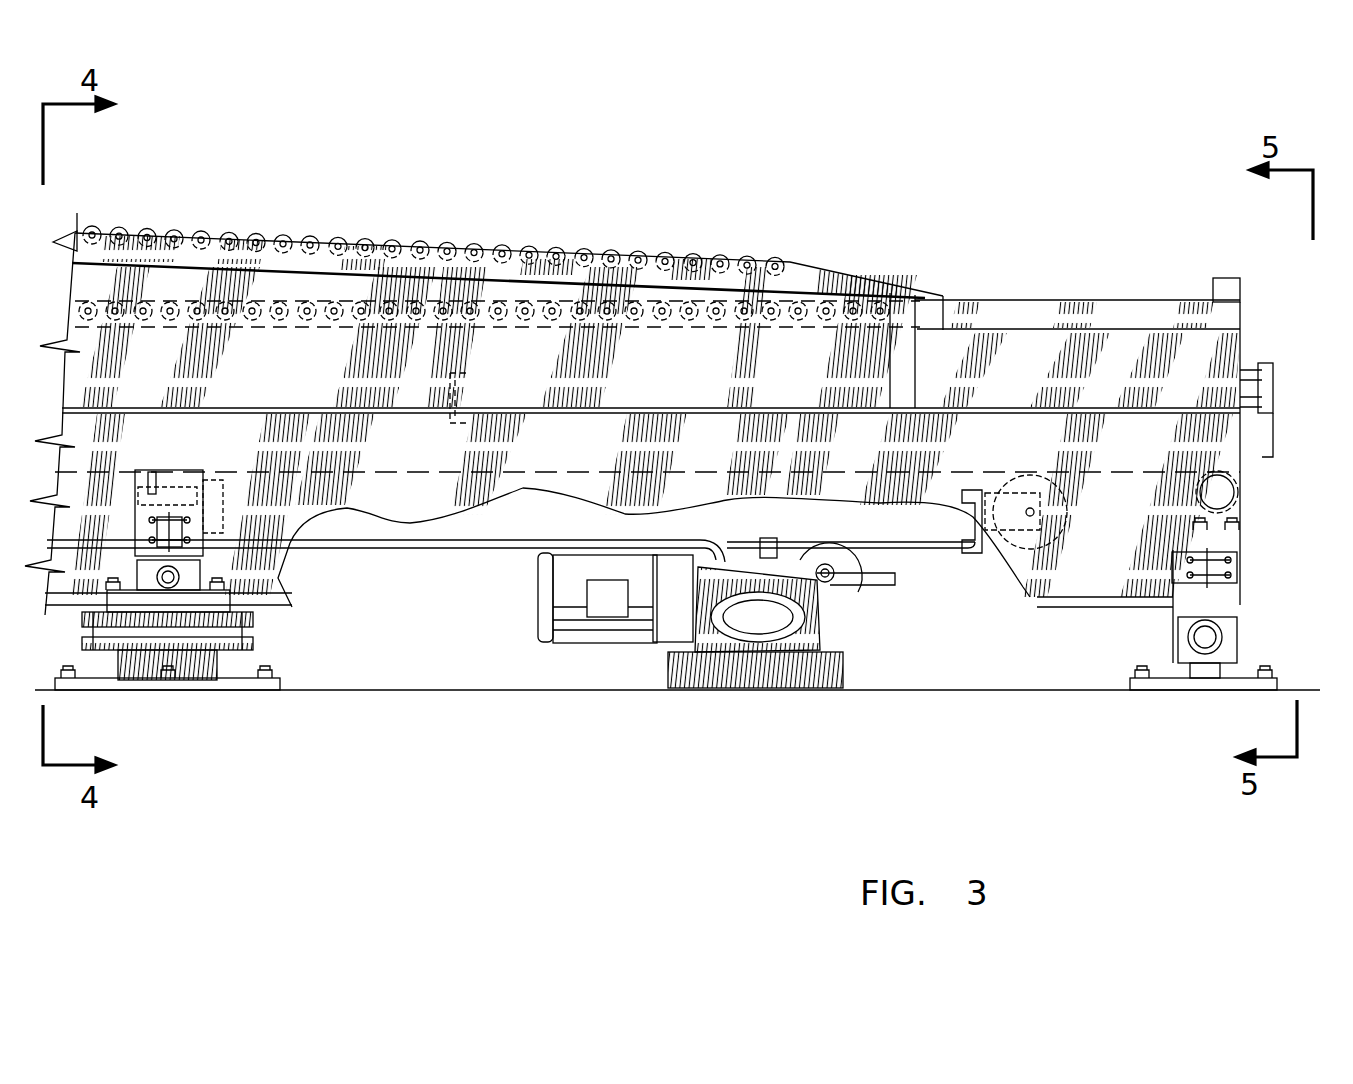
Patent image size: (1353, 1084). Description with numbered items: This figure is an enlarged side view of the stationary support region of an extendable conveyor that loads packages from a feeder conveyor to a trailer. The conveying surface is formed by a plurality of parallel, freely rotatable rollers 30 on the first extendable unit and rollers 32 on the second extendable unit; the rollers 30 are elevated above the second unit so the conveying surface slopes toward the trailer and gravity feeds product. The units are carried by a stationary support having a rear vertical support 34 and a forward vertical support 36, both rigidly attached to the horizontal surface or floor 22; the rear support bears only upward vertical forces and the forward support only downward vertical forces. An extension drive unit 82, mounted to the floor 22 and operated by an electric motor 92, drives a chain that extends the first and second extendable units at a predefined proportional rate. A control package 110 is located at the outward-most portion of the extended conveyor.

The floor 22 is at (1010, 690).
The rollers 30 is at (503, 238).
The rollers 32 is at (288, 300).
The rear vertical support 34 is at (253, 643).
The forward vertical support 36 is at (1237, 624).
The extension drive unit 82 is at (723, 692).
The electric motor 92 is at (578, 643).
The control package 110 is at (1273, 388).